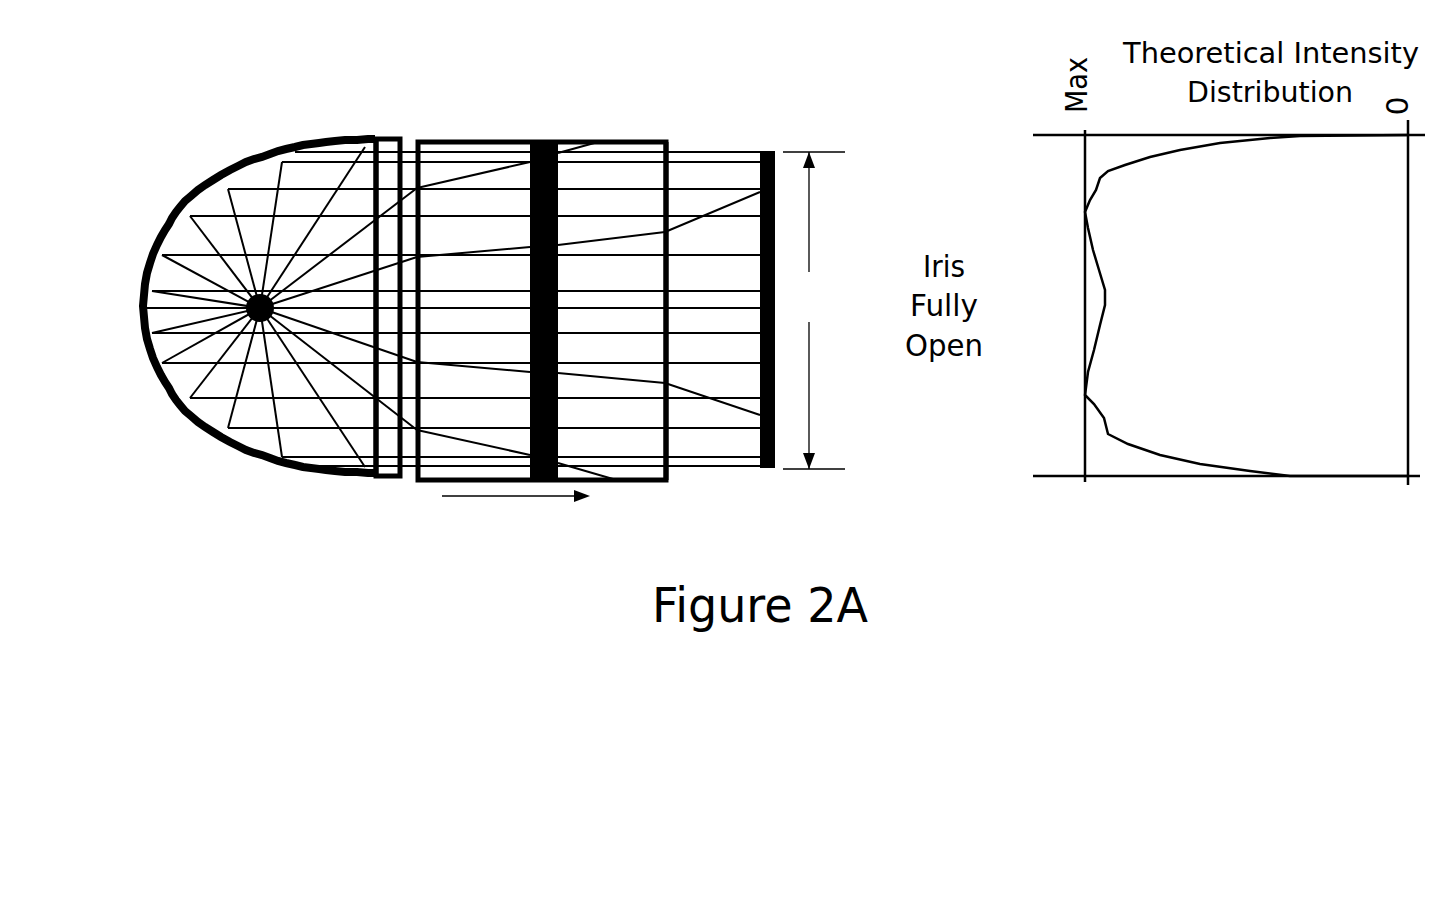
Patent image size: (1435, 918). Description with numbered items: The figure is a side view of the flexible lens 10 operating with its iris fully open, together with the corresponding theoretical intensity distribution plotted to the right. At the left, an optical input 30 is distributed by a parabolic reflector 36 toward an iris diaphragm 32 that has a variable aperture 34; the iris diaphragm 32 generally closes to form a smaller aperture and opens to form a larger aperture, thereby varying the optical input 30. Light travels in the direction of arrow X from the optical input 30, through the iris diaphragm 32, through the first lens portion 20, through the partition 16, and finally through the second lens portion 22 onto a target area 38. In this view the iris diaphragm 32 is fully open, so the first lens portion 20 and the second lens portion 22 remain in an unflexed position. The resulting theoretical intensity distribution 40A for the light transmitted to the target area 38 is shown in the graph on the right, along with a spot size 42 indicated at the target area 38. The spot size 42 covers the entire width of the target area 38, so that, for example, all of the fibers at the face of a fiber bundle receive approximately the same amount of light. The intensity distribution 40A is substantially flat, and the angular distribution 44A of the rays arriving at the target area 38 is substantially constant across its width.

The flexible lens 10 is at (494, 294).
The partition 16 is at (543, 142).
The first lens portion 20 is at (340, 250).
The second lens portion 22 is at (668, 175).
The optical input 30 is at (202, 418).
The iris diaphragm 32 is at (390, 138).
The aperture 34 is at (383, 175).
The parabolic reflector 36 is at (243, 170).
The target area 38 is at (770, 152).
The theoretical intensity distribution 40A is at (1073, 212).
The spot size 42 is at (814, 310).
The angular distribution 44A is at (713, 187).